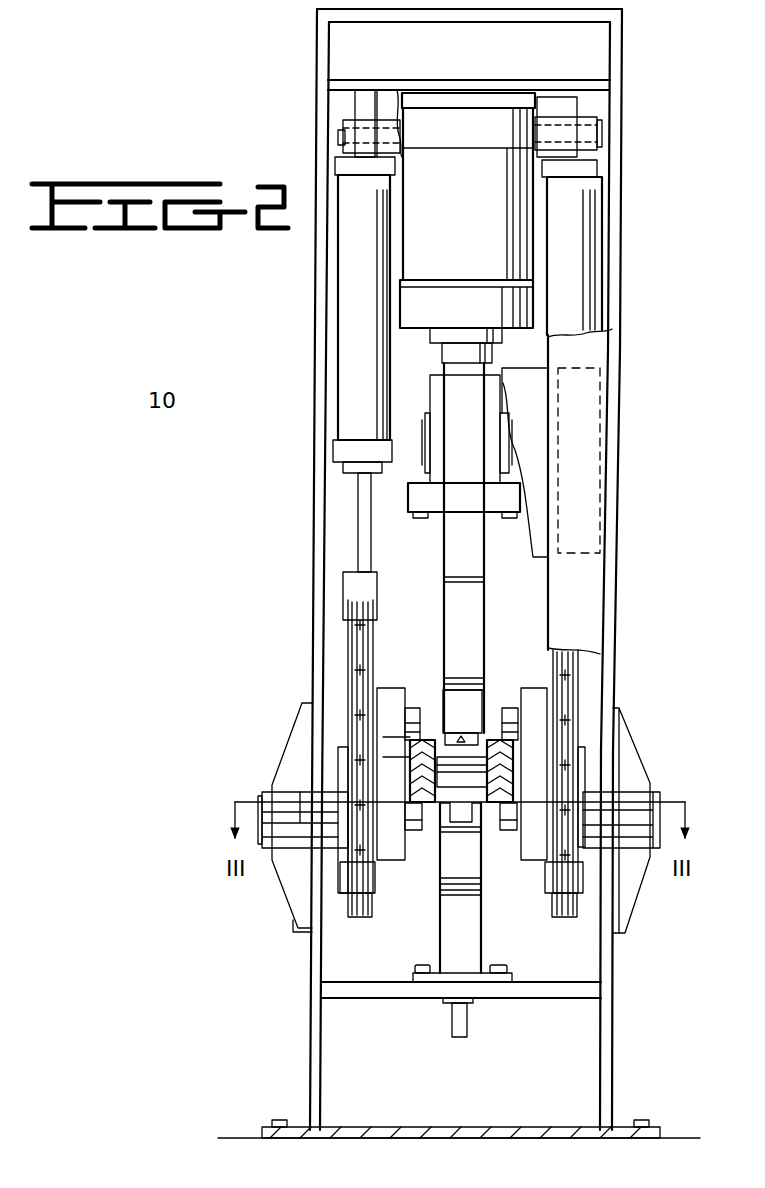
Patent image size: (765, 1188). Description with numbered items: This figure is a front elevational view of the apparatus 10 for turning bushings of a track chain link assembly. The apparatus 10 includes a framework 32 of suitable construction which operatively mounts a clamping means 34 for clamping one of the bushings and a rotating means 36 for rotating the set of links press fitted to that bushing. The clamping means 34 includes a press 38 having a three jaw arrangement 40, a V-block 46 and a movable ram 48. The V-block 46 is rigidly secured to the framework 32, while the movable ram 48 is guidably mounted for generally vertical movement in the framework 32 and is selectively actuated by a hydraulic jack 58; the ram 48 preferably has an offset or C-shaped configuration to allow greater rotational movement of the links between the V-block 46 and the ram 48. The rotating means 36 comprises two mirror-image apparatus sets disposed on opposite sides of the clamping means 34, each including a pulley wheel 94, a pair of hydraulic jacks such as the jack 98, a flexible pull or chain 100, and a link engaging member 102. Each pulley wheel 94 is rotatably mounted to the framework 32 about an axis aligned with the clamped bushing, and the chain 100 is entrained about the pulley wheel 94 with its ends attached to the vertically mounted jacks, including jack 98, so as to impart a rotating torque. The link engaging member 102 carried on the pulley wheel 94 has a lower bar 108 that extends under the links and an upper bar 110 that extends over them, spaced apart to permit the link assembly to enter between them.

The apparatus 10 is at (258, 410).
The framework 32 is at (618, 197).
The clamping means 34 is at (489, 721).
The rotating means 36 is at (335, 762).
The press 38 is at (443, 637).
The three jaw arrangement 40 is at (440, 746).
The V-block 46 is at (440, 928).
The movable ram 48 is at (455, 546).
The hydraulic jack 58 is at (478, 224).
The pulley wheel 94 is at (590, 770).
The hydraulic jack 98 is at (345, 318).
The chain 100 is at (345, 653).
The link engaging member 102 is at (527, 832).
The bar 108 is at (503, 830).
The upper bar 110 is at (503, 708).